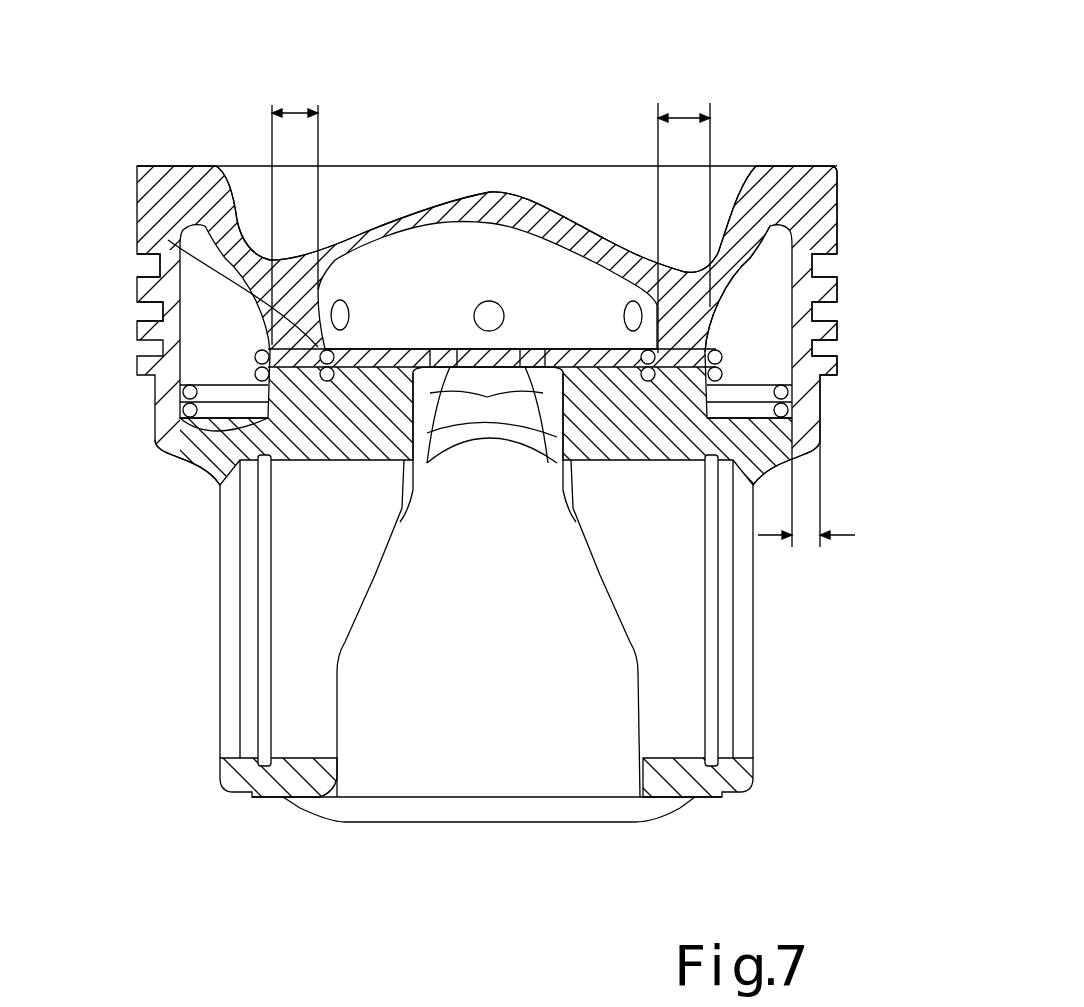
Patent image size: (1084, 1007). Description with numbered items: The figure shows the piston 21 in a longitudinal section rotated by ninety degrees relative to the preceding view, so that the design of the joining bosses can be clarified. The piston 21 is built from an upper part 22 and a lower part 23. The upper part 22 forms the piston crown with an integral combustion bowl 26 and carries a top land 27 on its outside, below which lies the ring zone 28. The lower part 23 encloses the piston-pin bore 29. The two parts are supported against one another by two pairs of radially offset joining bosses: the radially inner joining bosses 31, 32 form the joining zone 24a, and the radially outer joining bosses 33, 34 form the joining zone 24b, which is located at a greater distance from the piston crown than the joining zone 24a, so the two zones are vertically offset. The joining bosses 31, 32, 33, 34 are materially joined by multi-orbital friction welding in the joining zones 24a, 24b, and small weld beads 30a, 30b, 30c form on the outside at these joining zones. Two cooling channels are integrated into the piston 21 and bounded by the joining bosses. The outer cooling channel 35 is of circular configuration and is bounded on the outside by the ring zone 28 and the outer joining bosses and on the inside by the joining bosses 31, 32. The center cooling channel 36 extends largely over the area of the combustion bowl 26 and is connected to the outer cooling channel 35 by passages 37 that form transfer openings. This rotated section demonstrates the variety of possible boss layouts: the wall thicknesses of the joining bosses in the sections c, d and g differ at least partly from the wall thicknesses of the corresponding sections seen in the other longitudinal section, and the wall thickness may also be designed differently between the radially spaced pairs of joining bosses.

The piston 21 is at (768, 153).
The upper part 22 is at (847, 187).
The lower part 23 is at (763, 678).
The joining zone 24a is at (685, 343).
The joining zone 24b is at (815, 427).
The combustion bowl 26 is at (390, 193).
The top land 27 is at (840, 223).
The ring zone 28 is at (866, 257).
The piston-pin bore 29 is at (287, 658).
The weld bead 30a is at (317, 350).
The weld bead 30b is at (255, 355).
The weld bead 30c is at (152, 390).
The joining boss 31 is at (300, 348).
The joining boss 32 is at (290, 417).
The joining boss 33 is at (820, 396).
The joining boss 34 is at (823, 437).
The outer cooling channel 35 is at (742, 324).
The center cooling channel 36 is at (407, 300).
The passages 37 is at (608, 287).
The section c is at (297, 112).
The section d is at (683, 117).
The section g is at (815, 545).